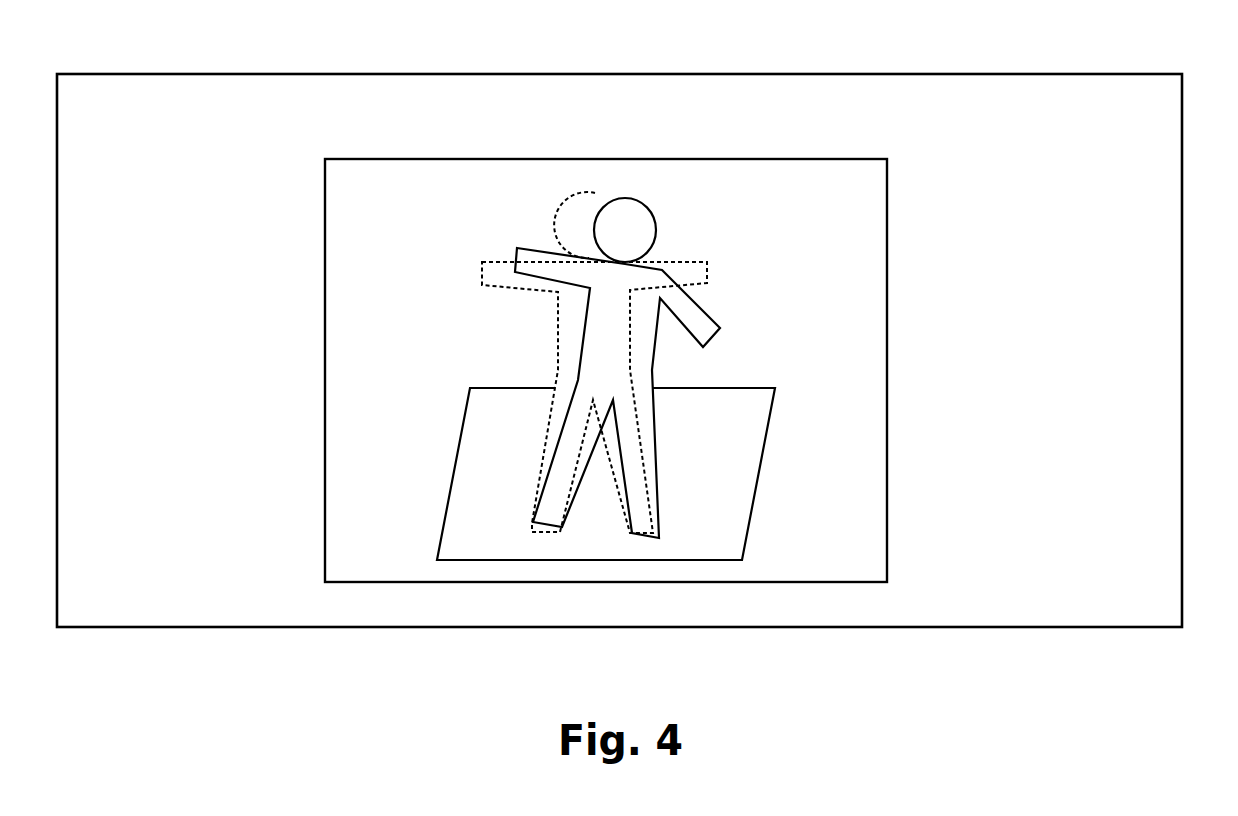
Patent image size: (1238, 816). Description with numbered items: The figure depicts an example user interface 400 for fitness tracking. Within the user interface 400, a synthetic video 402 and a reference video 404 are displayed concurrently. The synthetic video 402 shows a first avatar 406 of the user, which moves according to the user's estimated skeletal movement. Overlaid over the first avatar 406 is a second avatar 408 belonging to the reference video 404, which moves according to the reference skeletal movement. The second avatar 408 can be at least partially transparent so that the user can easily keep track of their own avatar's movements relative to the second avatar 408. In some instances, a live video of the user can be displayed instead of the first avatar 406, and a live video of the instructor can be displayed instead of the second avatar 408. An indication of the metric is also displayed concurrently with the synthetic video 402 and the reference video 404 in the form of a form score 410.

The user interface 400 is at (108, 74).
The synthetic video 402 is at (842, 275).
The reference video 404 is at (842, 305).
The first avatar 406 is at (657, 227).
The second avatar 408 is at (503, 287).
The form score 410 is at (732, 100).